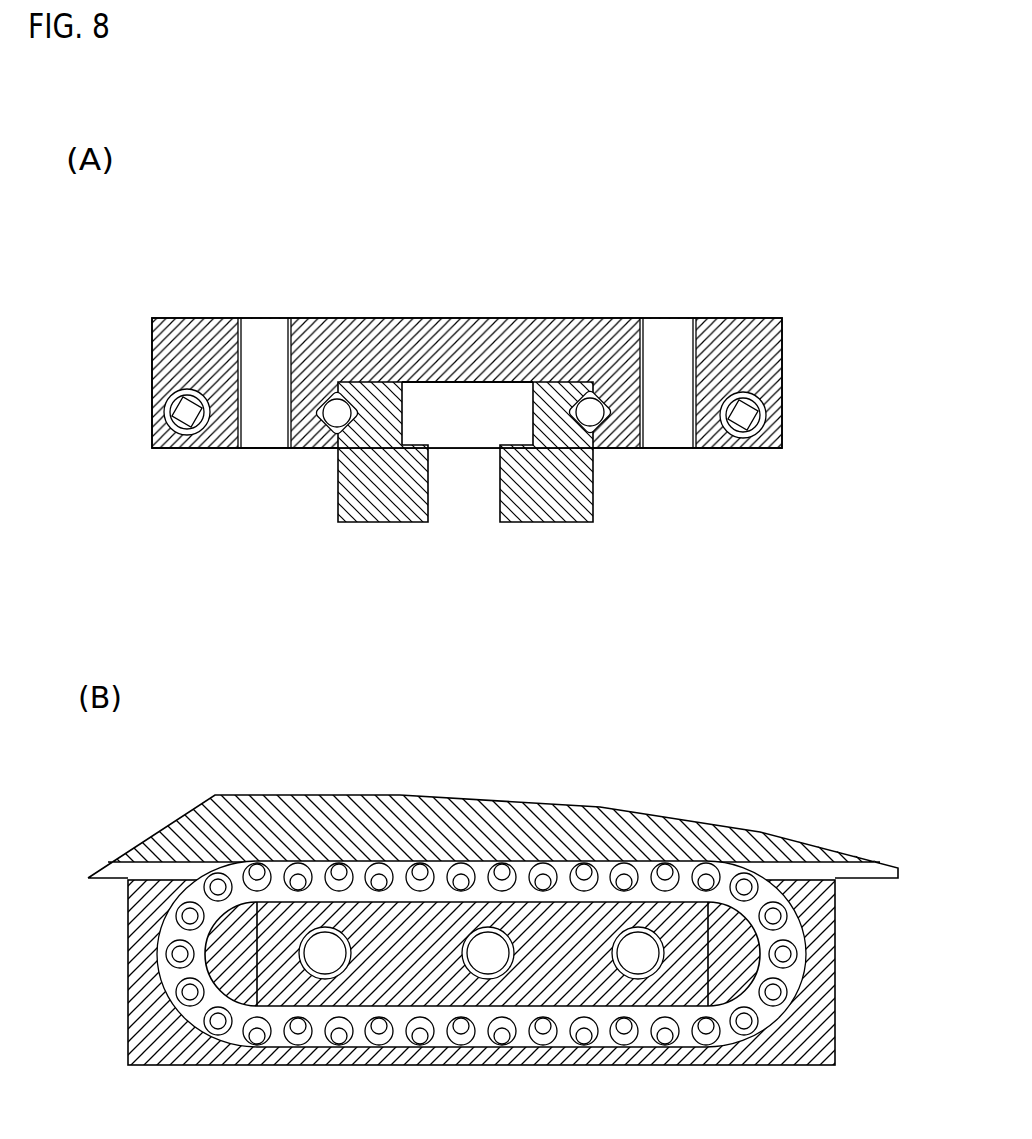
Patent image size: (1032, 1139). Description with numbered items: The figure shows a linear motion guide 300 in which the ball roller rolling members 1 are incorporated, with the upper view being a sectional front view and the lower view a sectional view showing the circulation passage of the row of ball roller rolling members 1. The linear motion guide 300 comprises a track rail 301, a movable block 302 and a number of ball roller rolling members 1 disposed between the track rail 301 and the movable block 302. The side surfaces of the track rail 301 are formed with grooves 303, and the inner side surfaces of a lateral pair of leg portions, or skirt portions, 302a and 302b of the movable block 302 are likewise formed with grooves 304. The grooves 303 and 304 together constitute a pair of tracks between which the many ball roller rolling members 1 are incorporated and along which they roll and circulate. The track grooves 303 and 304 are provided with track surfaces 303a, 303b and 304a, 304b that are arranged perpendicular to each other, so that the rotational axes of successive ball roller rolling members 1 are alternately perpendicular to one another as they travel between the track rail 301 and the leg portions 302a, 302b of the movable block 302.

The linear motion guide 300 is at (690, 282).
The track rail 301 is at (593, 477).
The movable block 302 is at (563, 362).
The leg portion 302a is at (303, 448).
The leg portion 302b is at (782, 443).
The groove 303 is at (332, 398).
The track surface 303a is at (318, 414).
The track surface 303b is at (320, 417).
The groove 304 is at (582, 398).
The track surface 304a is at (355, 440).
The track surface 304b is at (345, 400).
The ball roller rolling member 1 is at (572, 428).